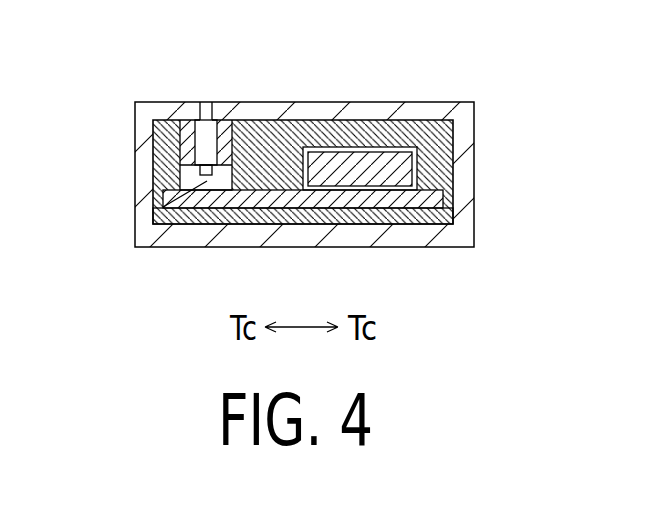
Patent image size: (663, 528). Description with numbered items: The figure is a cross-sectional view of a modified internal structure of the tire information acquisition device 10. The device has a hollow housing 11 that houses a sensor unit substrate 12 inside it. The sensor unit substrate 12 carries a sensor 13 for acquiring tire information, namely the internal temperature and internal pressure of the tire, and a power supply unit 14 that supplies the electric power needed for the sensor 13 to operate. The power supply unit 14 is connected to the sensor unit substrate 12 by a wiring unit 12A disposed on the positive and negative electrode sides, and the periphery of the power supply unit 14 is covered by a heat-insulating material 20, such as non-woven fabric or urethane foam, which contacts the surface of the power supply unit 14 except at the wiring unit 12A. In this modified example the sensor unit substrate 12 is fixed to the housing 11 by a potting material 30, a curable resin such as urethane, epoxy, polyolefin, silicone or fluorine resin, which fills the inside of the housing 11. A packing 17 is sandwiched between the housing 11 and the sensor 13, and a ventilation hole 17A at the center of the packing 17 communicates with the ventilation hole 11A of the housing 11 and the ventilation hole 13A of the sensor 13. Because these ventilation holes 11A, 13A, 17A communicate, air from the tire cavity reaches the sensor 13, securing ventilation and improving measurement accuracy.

The tire information acquisition device 10 is at (443, 100).
The housing 11 is at (145, 170).
The ventilation hole 11A is at (208, 148).
The sensor unit substrate 12 is at (287, 203).
The wiring unit 12A is at (353, 123).
The sensor 13 is at (212, 206).
The ventilation hole 13A is at (163, 207).
The power supply unit 14 is at (398, 123).
The packing 17 is at (223, 118).
The ventilation hole 17A is at (183, 118).
The heat-insulating material 20 is at (414, 155).
The potting material 30 is at (437, 219).